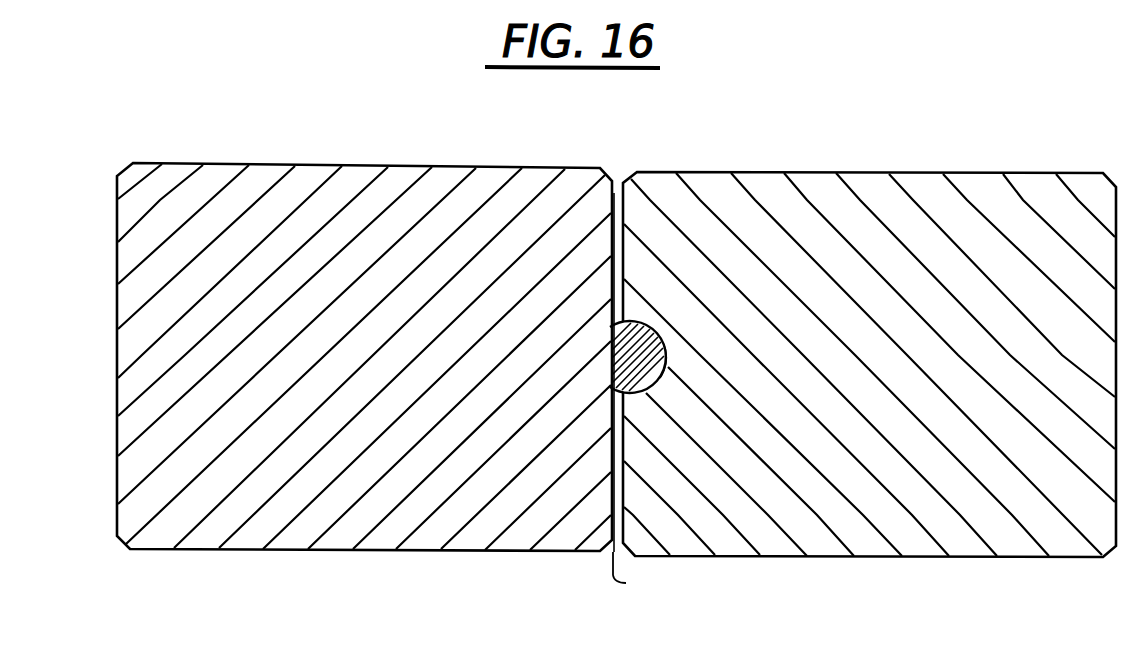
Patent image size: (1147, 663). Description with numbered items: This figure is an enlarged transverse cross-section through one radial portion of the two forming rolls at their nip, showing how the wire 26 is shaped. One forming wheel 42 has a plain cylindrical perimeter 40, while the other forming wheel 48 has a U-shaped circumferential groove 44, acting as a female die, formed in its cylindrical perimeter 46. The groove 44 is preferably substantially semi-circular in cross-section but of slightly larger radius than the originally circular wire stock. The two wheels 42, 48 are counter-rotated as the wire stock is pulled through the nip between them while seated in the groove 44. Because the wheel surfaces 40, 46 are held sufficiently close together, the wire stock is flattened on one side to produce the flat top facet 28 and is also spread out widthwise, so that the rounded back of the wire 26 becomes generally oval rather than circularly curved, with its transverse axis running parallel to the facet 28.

The wire 26 is at (633, 321).
The flat top facet 28 is at (609, 349).
The cylindrical perimeter 40 is at (613, 194).
The forming wheel 42 is at (380, 574).
The U-shaped circumferential groove 44 is at (654, 356).
The cylindrical perimeter 46 is at (637, 576).
The forming wheel 48 is at (875, 532).